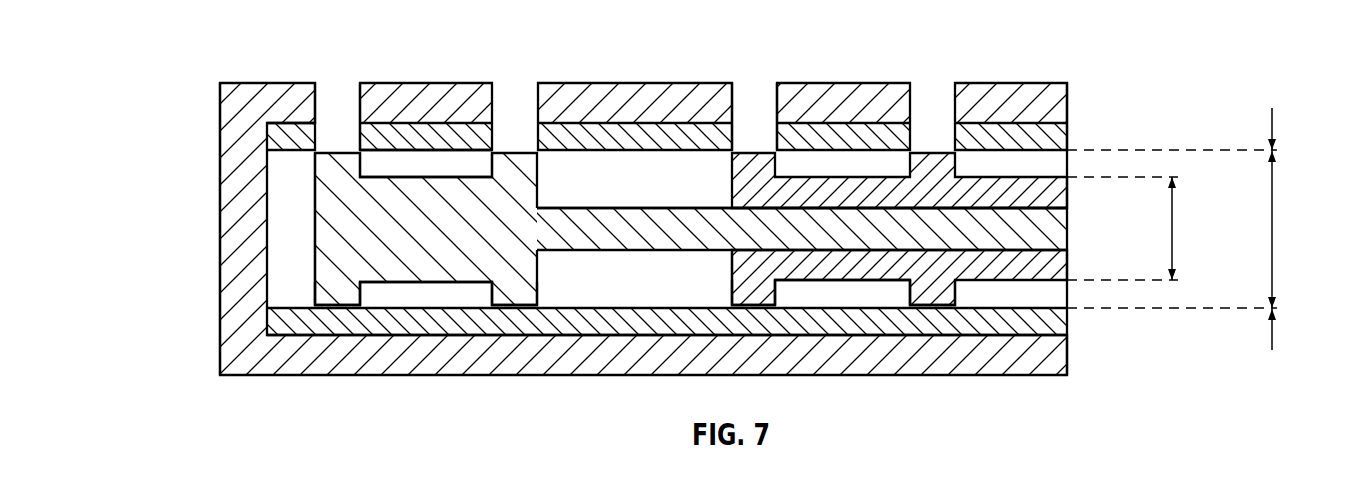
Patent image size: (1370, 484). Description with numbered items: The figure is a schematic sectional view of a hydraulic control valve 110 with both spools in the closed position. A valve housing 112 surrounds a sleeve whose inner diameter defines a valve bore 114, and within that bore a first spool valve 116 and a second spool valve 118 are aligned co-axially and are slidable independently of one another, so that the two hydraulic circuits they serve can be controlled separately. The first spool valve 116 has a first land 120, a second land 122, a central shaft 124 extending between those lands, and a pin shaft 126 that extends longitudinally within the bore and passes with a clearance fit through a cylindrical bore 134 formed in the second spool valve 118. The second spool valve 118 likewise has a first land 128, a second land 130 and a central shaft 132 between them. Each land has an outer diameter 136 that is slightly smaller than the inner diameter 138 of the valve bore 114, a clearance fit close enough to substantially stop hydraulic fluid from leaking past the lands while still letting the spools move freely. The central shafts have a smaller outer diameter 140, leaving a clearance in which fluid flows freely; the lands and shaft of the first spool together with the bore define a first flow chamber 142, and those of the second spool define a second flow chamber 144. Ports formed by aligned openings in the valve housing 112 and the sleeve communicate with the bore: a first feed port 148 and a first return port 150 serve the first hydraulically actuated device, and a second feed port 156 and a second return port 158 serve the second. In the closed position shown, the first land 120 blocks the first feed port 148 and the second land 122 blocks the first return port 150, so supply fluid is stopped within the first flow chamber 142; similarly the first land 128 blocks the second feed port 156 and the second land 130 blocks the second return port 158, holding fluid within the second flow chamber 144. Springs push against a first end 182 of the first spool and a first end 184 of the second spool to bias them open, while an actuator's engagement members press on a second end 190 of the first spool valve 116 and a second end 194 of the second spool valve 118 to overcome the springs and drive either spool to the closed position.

The hydraulic control valve 110 is at (335, 396).
The valve housing 112 is at (220, 303).
The valve bore 114 is at (627, 178).
The first spool valve 116 is at (330, 258).
The second spool valve 118 is at (853, 272).
The first land 120 is at (332, 288).
The second land 122 is at (510, 282).
The central shaft 124 is at (450, 283).
The pin shaft 126 is at (668, 230).
The first land 128 is at (752, 290).
The second land 130 is at (933, 290).
The central shaft 132 is at (863, 283).
The cylindrical bore 134 is at (1030, 207).
The outer diameter 136 is at (1273, 130).
The inner diameter 138 is at (1273, 227).
The outer diameter 140 is at (1173, 227).
The first flow chamber 142 is at (433, 160).
The second flow chamber 144 is at (875, 167).
The first feed port 148 is at (512, 103).
The first return port 150 is at (345, 105).
The second feed port 156 is at (937, 110).
The second return port 158 is at (760, 103).
The first end 182 is at (313, 215).
The first end 184 is at (730, 277).
The second end 190 is at (1055, 237).
The second end 194 is at (1057, 272).